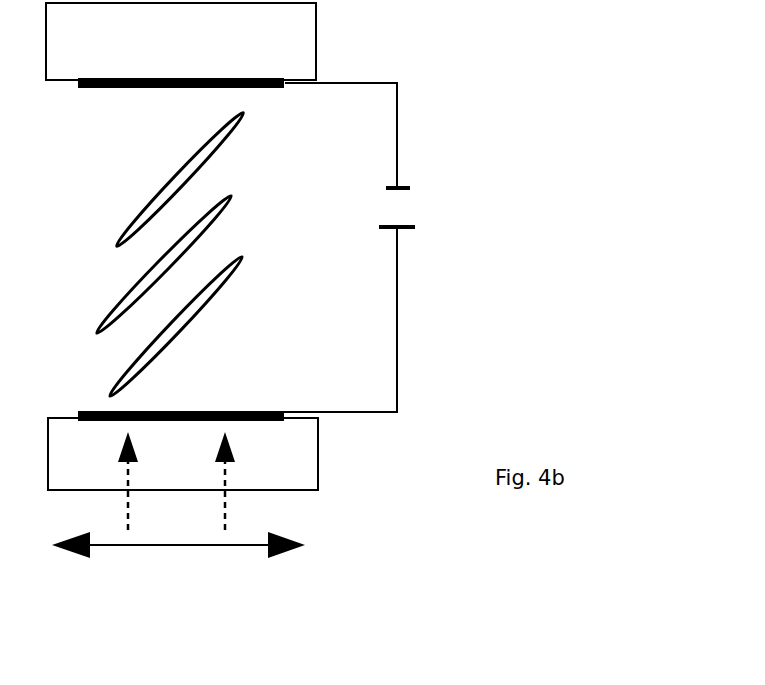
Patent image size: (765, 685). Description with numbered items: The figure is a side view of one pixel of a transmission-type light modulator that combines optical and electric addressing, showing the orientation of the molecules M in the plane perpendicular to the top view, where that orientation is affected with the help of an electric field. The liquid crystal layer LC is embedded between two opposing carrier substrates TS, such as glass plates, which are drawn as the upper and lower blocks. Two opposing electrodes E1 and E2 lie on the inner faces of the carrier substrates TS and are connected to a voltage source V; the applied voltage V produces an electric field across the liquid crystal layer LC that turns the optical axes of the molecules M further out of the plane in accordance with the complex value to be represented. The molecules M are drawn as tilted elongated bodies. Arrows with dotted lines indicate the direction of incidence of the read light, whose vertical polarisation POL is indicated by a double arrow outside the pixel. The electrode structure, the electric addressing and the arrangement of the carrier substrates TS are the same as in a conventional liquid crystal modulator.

The carrier substrates TS is at (182, 246).
The electrode E1 is at (277, 78).
The electrode E2 is at (284, 421).
The applied voltage V is at (370, 247).
The liquid crystal layer LC is at (204, 255).
The molecules M is at (225, 212).
The polarisation of the read light POL is at (201, 558).